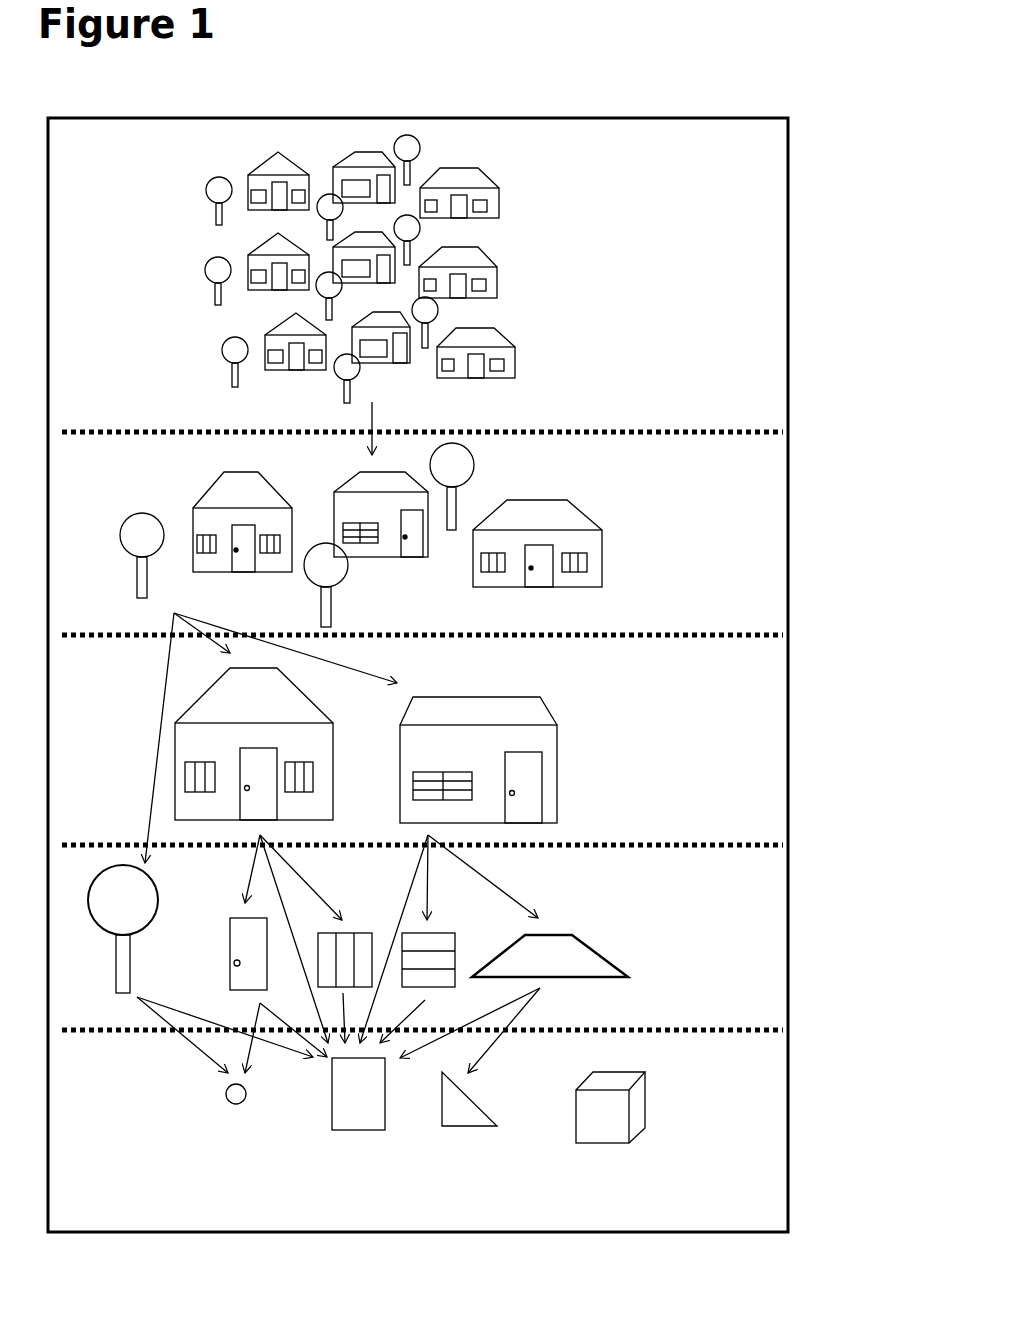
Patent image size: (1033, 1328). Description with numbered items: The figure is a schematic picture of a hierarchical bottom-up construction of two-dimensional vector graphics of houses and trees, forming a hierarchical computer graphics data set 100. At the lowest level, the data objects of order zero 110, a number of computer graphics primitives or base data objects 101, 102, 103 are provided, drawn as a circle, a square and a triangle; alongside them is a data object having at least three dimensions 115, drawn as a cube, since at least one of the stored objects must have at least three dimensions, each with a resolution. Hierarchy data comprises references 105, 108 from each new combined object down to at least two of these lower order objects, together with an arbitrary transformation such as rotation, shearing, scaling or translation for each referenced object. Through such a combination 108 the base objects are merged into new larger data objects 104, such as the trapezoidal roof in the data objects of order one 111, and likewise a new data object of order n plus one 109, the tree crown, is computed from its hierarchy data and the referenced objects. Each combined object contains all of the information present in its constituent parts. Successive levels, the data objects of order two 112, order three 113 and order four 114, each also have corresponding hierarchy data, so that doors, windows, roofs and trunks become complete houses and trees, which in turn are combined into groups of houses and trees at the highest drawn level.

The hierarchical computer graphics data set 100 is at (733, 118).
The base data object 101 is at (233, 1105).
The base data object 102 is at (358, 1131).
The base data object 103 is at (460, 1127).
The combined data object 104 is at (593, 948).
The reference 105 is at (133, 995).
The combination 108 is at (540, 990).
The new data object of order n+1 109 is at (158, 903).
The data objects of order 0 110 is at (530, 1131).
The data objects of order 1 111 is at (461, 969).
The data objects of order 2 112 is at (777, 713).
The data objects of order 3 113 is at (777, 545).
The data objects of order 4 114 is at (777, 333).
The data object having at least three dimensions 115 is at (576, 1108).